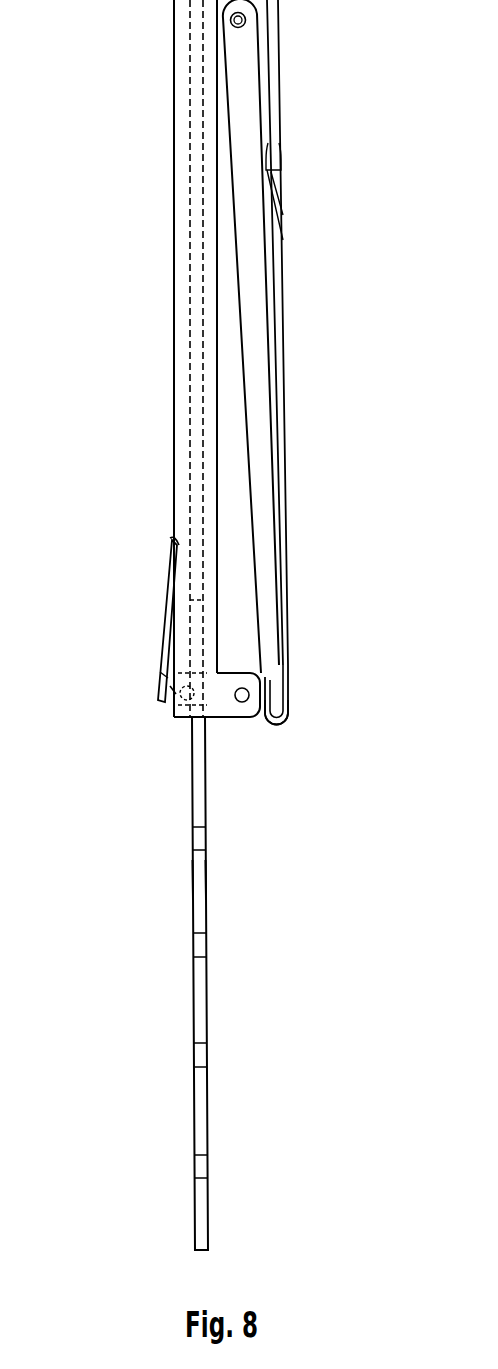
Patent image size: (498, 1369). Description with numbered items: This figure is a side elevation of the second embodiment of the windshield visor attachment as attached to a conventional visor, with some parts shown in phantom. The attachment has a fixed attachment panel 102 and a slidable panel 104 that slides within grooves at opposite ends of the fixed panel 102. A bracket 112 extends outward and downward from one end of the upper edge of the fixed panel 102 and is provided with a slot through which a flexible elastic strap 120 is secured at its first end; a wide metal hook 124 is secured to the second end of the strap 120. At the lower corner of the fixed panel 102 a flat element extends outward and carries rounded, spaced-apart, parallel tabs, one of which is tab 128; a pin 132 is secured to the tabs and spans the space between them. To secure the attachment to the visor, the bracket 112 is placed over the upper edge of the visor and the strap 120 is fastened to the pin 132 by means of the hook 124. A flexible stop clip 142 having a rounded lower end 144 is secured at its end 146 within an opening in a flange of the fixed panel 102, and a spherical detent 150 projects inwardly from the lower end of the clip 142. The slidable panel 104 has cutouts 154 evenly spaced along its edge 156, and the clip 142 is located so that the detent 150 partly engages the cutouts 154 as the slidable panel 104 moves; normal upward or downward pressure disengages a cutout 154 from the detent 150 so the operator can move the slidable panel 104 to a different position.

The fixed attachment panel 102 is at (162, 276).
The slidable panel 104 is at (178, 985).
The bracket 112 is at (283, 44).
The flexible elastic strap 120 is at (290, 357).
The wide metal hook 124 is at (274, 727).
The rounded tab 128 is at (220, 718).
The pin 132 is at (250, 687).
The flexible stop clip 142 is at (160, 617).
The rounded lower end 144 is at (172, 690).
The end 146 is at (173, 540).
The spherical detent 150 is at (173, 710).
The cutouts 154 is at (203, 838).
The edge 156 is at (195, 880).